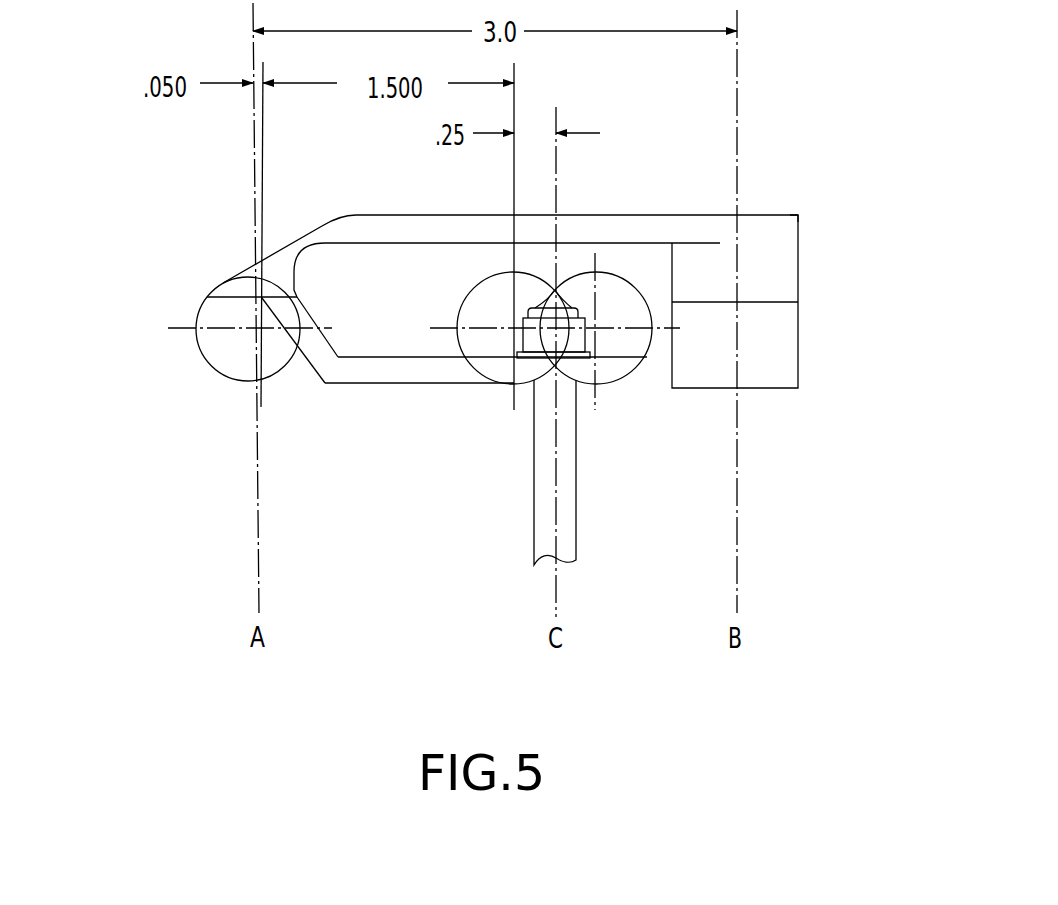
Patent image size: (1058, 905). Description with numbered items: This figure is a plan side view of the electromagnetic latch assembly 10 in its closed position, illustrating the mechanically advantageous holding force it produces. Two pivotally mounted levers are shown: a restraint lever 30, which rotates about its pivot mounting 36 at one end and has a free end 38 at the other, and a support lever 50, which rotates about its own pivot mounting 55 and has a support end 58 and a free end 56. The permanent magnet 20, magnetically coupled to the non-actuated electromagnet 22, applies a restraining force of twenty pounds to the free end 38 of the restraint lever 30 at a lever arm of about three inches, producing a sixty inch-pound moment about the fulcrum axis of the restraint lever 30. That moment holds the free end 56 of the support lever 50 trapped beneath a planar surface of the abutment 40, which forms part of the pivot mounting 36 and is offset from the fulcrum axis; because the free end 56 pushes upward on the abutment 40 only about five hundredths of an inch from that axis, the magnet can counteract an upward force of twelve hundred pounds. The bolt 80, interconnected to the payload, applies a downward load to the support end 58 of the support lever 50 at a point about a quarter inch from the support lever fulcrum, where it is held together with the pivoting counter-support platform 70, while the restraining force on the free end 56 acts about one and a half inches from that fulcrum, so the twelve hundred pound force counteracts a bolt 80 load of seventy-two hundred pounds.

The electromagnetic latch assembly 10 is at (117, 230).
The permanent magnet 20 is at (785, 250).
The electromagnet 22 is at (783, 340).
The restraint lever 30 is at (628, 217).
The pivot mounting 36 is at (250, 325).
The free end 38 is at (800, 213).
The abutment 40 is at (235, 293).
The support lever 50 is at (448, 368).
The pivot mounting 55 is at (512, 330).
The free end 56 is at (288, 315).
The support end 58 is at (548, 362).
The counter-support platform 70 is at (612, 387).
The bolt 80 is at (568, 523).